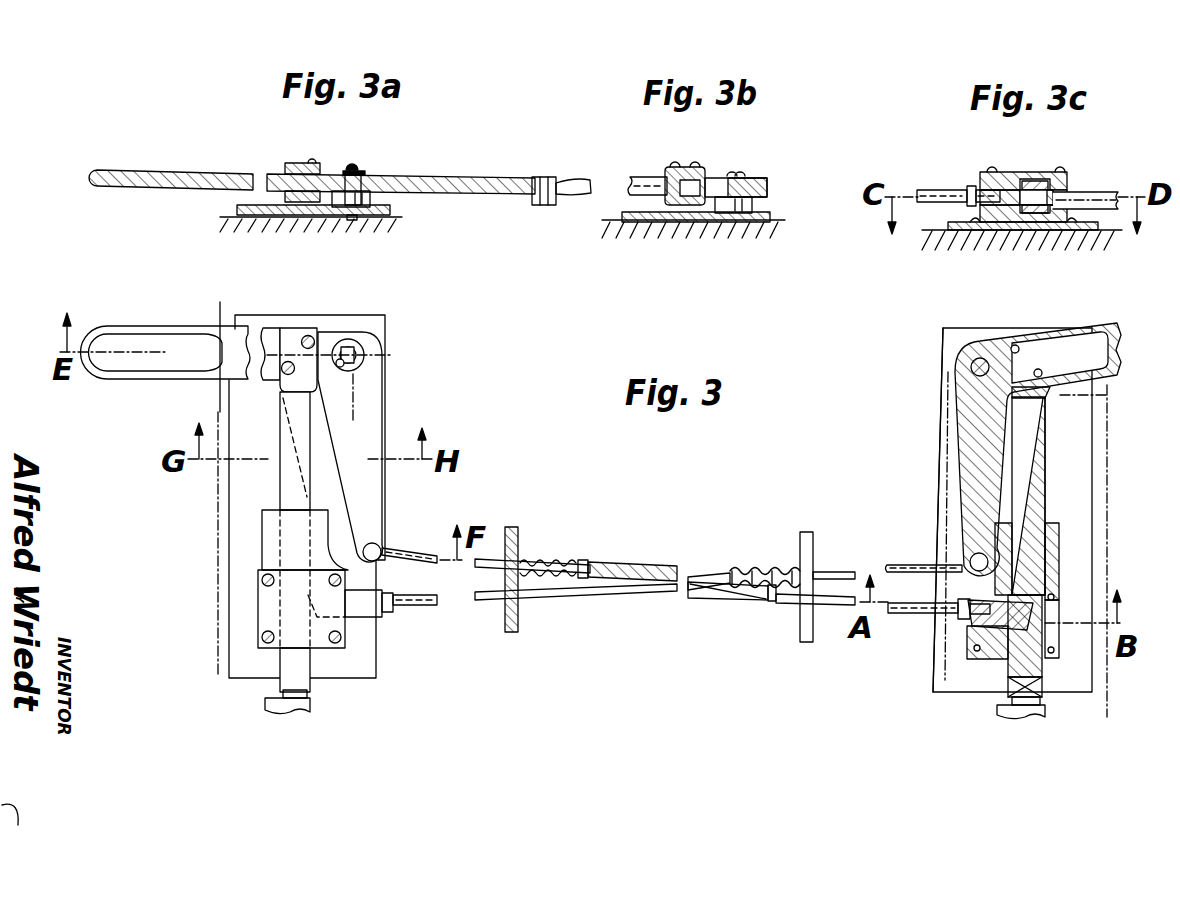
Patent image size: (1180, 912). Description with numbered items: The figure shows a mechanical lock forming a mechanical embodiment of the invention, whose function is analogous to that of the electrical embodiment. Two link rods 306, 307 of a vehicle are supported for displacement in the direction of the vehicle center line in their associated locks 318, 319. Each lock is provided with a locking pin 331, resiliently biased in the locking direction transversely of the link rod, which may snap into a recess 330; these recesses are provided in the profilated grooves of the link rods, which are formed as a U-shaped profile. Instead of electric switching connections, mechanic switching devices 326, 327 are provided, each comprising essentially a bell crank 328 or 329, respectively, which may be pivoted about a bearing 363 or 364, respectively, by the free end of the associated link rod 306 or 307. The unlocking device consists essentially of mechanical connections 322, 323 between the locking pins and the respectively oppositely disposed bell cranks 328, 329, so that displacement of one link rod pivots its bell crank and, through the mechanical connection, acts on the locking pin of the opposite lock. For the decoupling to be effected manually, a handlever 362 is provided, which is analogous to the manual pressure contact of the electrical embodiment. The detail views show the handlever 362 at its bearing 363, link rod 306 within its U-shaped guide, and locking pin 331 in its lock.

In FIG. 3B, the link rod 306 is at (668, 176).
In FIG. 3, the link rod 306 is at (289, 470).
In FIG. 3, the link rod 307 is at (1042, 484).
In FIG. 3, the lock 318 is at (386, 619).
In FIG. 3, the lock 319 is at (931, 665).
In FIG. 3, the mechanical connection 322 is at (558, 566).
In FIG. 3, the mechanical connection 323 is at (556, 598).
In FIG. 3, the mechanic switching device 326 is at (388, 381).
In FIG. 3, the mechanic switching device 327 is at (939, 394).
In FIG. 3, the bell crank 328 is at (368, 498).
In FIG. 3, the bell crank 329 is at (968, 423).
In FIG. 3, the recess 330 is at (1044, 592).
In FIG. 3C, the locking pin 331 is at (1011, 186).
In FIG. 3, the locking pin 331 is at (970, 626).
In FIG. 3A, the handlever 362 is at (165, 188).
In FIG. 3, the handlever 362 is at (143, 370).
In FIG. 3A, the bearing 363 is at (357, 167).
In FIG. 3, the bearing 363 is at (365, 354).
In FIG. 3, the bearing 364 is at (971, 365).